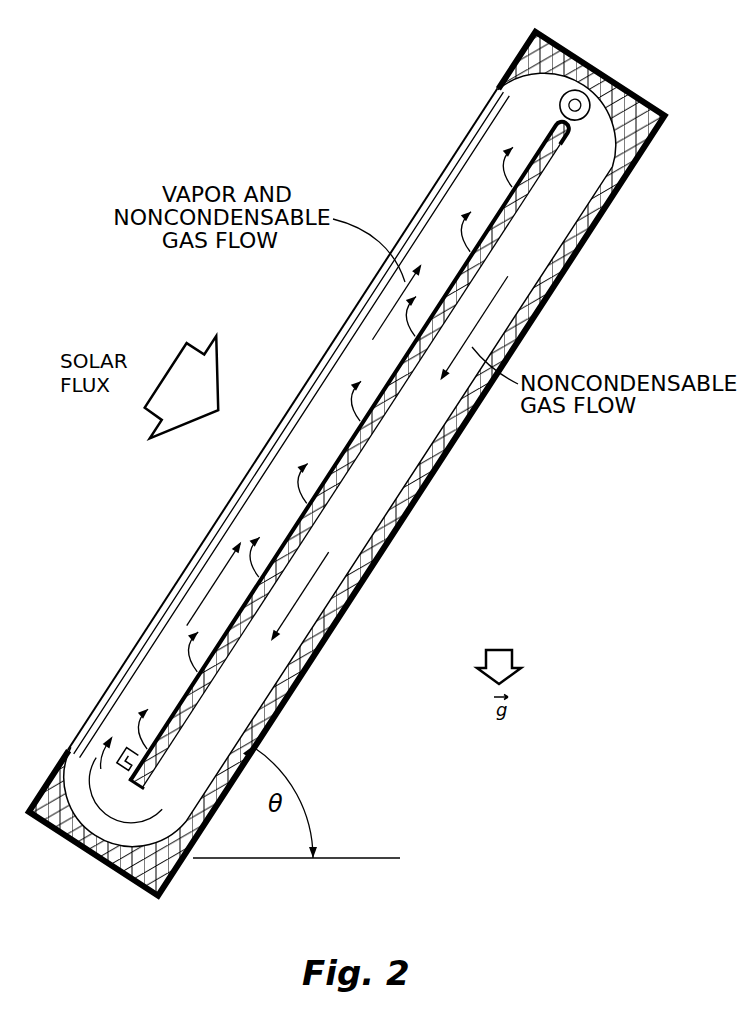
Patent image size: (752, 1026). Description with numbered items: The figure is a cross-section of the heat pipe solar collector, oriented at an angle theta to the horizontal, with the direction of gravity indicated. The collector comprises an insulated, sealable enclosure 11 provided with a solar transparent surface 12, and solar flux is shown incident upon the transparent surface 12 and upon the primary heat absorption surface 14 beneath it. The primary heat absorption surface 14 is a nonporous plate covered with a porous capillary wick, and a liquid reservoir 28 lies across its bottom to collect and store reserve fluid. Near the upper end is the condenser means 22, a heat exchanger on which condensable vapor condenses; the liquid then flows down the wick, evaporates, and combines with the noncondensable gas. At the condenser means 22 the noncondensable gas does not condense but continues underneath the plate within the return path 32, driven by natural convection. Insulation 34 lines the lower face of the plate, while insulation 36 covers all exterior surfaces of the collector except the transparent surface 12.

The insulated, sealable enclosure 11 is at (411, 504).
The solar transparent surface 12 is at (351, 313).
The primary heat absorption surface 14 is at (183, 693).
The condenser means 22 is at (580, 88).
The liquid reservoir 28 is at (121, 760).
The return path 32 is at (510, 273).
The insulation 34 is at (237, 635).
The insulation 36 is at (447, 428).